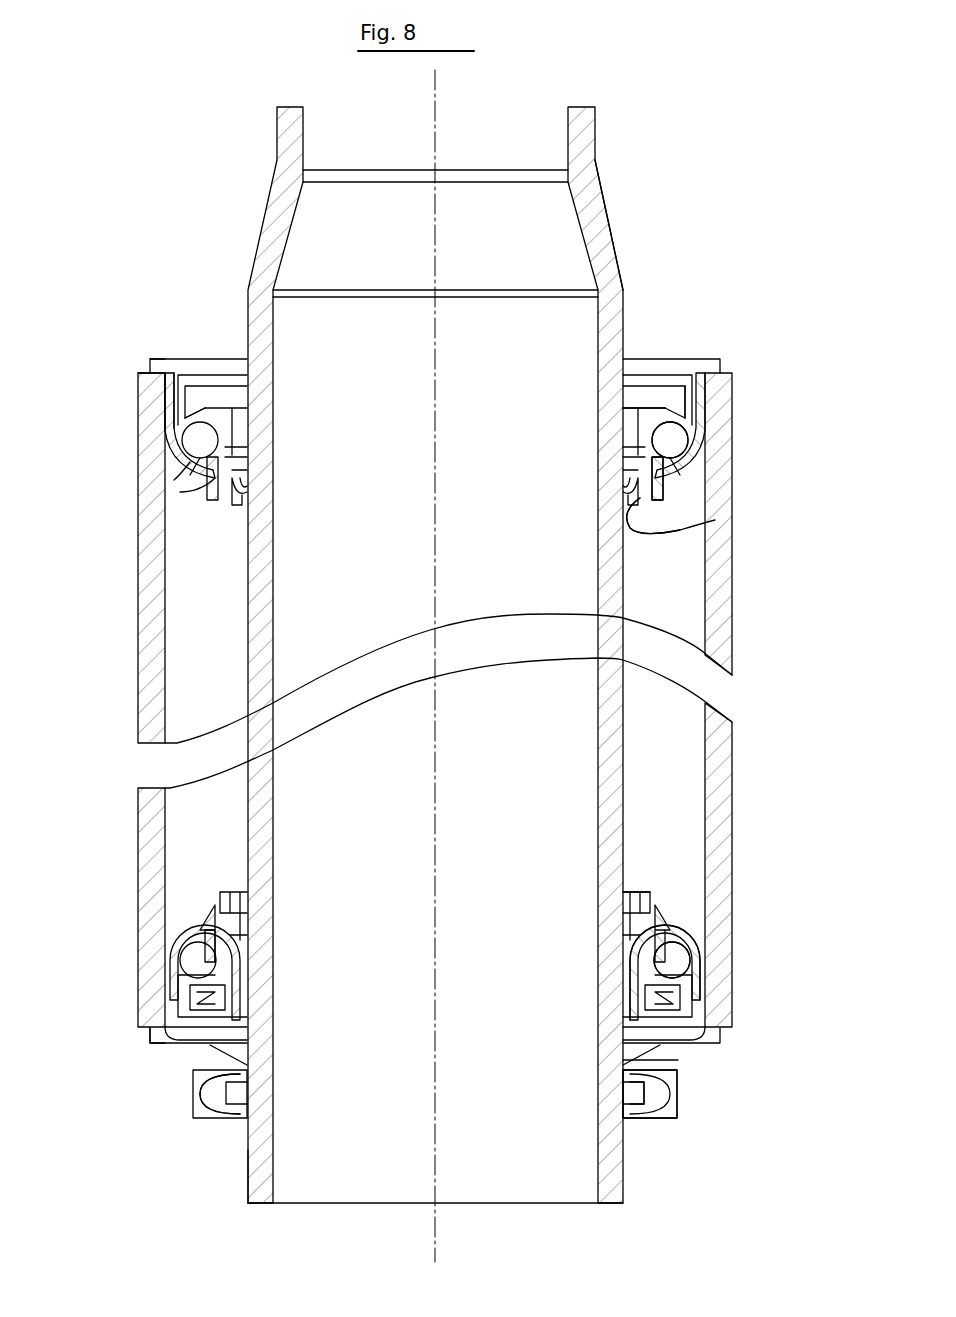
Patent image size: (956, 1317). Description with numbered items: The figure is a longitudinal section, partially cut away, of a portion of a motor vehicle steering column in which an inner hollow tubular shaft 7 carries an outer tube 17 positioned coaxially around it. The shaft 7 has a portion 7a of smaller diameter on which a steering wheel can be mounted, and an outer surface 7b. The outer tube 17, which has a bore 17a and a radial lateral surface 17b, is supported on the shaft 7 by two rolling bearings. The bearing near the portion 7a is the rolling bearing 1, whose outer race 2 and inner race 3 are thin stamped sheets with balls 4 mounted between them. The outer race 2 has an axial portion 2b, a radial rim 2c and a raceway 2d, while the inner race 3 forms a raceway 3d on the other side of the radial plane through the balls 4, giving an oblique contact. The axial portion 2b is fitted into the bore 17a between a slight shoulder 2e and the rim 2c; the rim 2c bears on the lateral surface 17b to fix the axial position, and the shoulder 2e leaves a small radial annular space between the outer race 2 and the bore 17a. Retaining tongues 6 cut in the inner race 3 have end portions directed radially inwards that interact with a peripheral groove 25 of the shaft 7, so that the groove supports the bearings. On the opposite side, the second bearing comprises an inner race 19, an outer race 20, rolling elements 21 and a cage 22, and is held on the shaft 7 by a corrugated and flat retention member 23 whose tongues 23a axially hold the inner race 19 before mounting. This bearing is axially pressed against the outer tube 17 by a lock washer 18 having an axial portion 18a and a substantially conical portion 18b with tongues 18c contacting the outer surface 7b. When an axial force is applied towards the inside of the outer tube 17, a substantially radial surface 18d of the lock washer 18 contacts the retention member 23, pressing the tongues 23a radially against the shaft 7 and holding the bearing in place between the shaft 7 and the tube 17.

The rolling bearing 1 is at (689, 354).
The outer race 2 is at (190, 356).
The axial portion 2b is at (172, 410).
The radial rim 2c is at (160, 364).
The raceway 2d is at (180, 492).
The slight shoulder 2e is at (176, 436).
The inner race 3 is at (698, 412).
The raceway 3d is at (203, 438).
The balls 4 is at (674, 444).
The retaining tongues 6 is at (690, 472).
The inner hollow tubular shaft 7 is at (262, 228).
The portion of smaller diameter 7a is at (608, 220).
The outer surface 7b is at (247, 1172).
The outer tube 17 is at (140, 705).
The bore 17a is at (182, 543).
The radial lateral surface 17b is at (142, 392).
The lock washer 18 is at (190, 462).
The axial portion 18a is at (660, 1096).
The substantially conical portion 18b is at (215, 1118).
The tongues 18c is at (640, 1100).
The substantially radial surface 18d is at (200, 1090).
The inner race 19 is at (660, 893).
The outer race 20 is at (703, 958).
The rolling elements 21 is at (674, 962).
The cage 22 is at (660, 905).
The retention member 23 is at (210, 1040).
The tongues 23a is at (255, 932).
The peripheral groove 25 is at (690, 522).